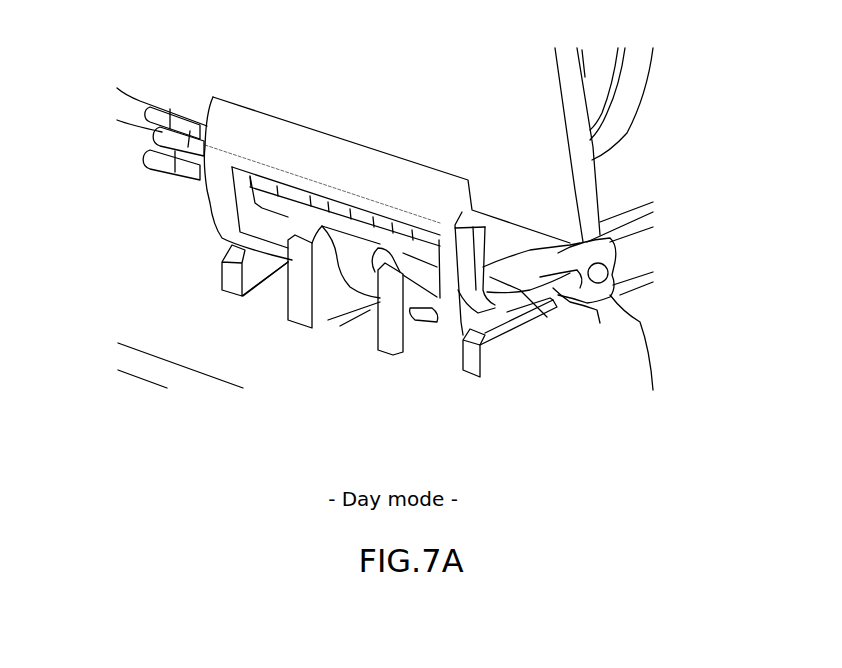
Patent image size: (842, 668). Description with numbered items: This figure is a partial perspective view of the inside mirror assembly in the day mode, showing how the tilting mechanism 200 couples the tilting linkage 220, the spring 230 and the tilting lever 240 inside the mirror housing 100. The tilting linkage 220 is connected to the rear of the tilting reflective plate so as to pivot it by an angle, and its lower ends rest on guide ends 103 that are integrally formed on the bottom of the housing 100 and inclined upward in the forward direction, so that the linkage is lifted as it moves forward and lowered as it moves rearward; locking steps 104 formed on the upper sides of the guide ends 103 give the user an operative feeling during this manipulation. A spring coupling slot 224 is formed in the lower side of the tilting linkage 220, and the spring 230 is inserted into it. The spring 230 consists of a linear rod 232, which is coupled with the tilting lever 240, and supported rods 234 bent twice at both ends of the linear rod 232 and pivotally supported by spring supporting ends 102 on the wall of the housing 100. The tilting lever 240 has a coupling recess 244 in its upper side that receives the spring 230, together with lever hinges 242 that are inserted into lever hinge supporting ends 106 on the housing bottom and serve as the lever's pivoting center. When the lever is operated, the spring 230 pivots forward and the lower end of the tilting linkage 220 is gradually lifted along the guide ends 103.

The mirror housing 100 is at (143, 367).
The spring supporting ends 102 is at (607, 298).
The guide ends 103 is at (472, 367).
The locking steps 104 is at (512, 317).
The lever hinge supporting ends 106 is at (407, 302).
The tilting mechanism 200 is at (305, 337).
The tilting linkage 220 is at (598, 190).
The spring coupling slot 224 is at (255, 217).
The spring 230 is at (612, 367).
The linear rod 232 is at (537, 300).
The supported rods 234 is at (587, 307).
The tilting lever 240 is at (362, 298).
The lever hinges 242 is at (408, 262).
The coupling recess 244 is at (383, 278).